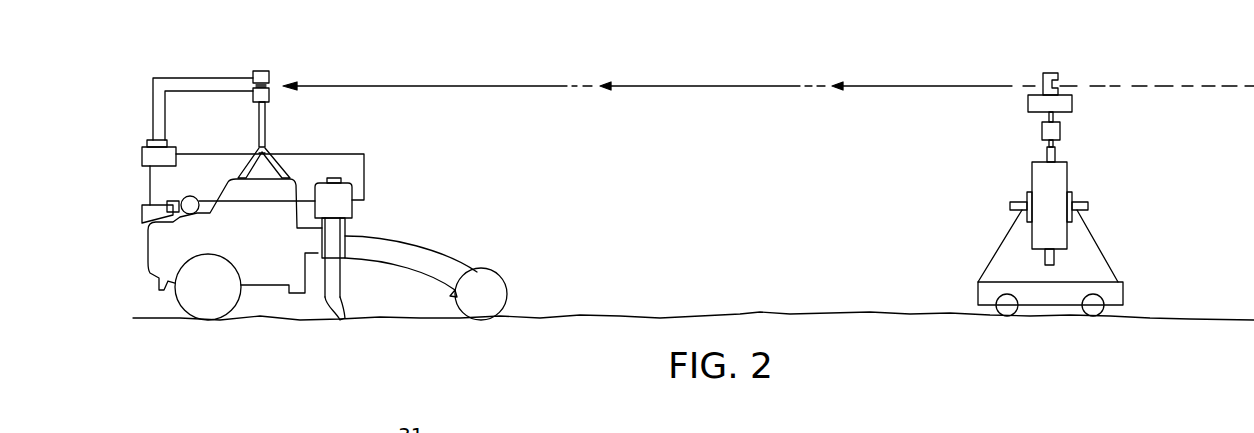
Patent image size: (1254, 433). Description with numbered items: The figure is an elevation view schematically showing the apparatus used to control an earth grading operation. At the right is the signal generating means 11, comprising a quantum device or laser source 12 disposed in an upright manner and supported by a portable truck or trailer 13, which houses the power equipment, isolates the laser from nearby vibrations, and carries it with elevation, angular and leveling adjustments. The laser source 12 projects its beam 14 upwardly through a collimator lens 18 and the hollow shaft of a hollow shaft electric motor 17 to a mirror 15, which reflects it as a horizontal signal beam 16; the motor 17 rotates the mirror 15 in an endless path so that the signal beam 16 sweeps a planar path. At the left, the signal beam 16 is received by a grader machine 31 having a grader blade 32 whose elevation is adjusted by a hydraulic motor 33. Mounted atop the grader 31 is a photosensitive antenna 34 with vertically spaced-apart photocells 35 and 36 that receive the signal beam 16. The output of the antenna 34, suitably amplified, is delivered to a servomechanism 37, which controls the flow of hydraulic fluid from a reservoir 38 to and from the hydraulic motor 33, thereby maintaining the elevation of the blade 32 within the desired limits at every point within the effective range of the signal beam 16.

The signal generating means 11 is at (1089, 149).
The quantum device 12 is at (1068, 168).
The portable truck or trailer 13 is at (1095, 280).
The beam 14 is at (1052, 118).
The mirror 15 is at (1057, 82).
The signal beam 16 is at (930, 86).
The hollow shaft electric motor 17 is at (1072, 107).
The collimator lens 18 is at (1060, 128).
The grader machine 31 is at (416, 217).
The grader blade 32 is at (344, 288).
The hydraulic motor 33 is at (344, 207).
The photosensitive antenna 34 is at (300, 65).
The photocell 35 is at (268, 71).
The photocell 36 is at (270, 95).
The servomechanism 37 is at (153, 153).
The reservoir 38 is at (142, 215).